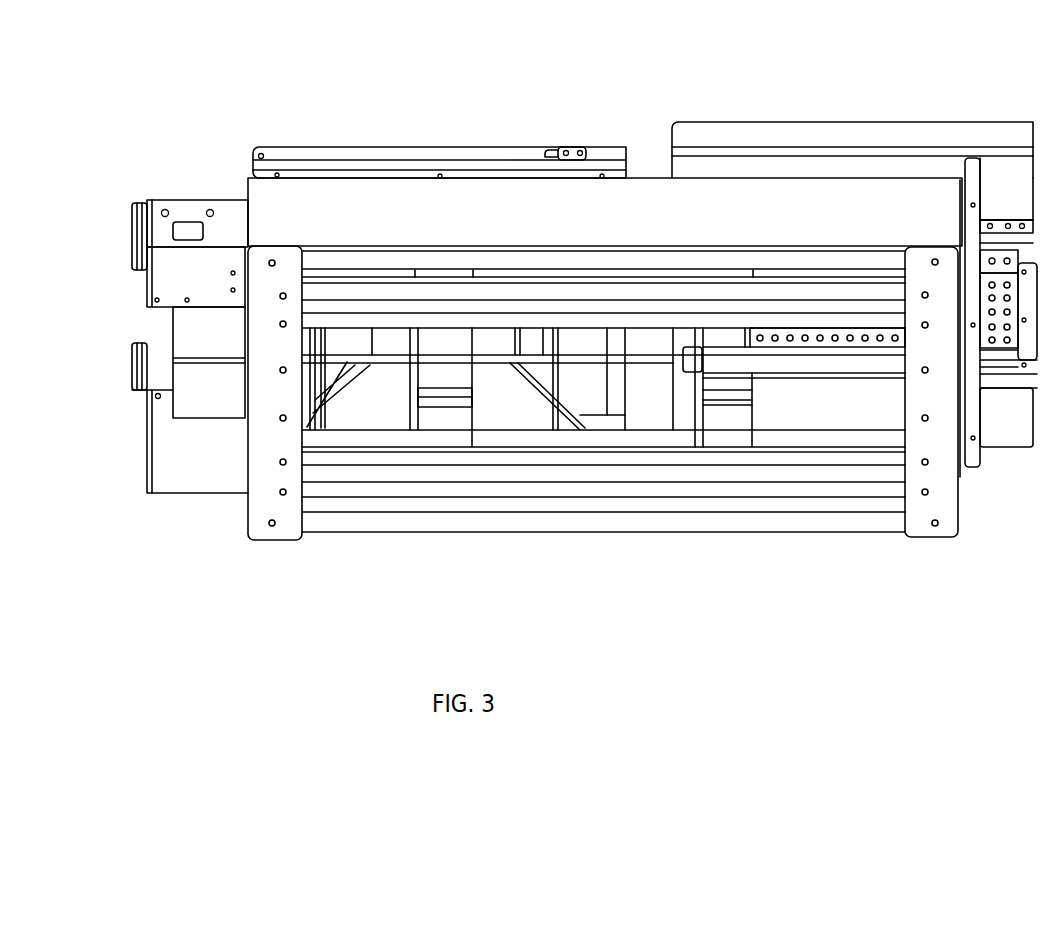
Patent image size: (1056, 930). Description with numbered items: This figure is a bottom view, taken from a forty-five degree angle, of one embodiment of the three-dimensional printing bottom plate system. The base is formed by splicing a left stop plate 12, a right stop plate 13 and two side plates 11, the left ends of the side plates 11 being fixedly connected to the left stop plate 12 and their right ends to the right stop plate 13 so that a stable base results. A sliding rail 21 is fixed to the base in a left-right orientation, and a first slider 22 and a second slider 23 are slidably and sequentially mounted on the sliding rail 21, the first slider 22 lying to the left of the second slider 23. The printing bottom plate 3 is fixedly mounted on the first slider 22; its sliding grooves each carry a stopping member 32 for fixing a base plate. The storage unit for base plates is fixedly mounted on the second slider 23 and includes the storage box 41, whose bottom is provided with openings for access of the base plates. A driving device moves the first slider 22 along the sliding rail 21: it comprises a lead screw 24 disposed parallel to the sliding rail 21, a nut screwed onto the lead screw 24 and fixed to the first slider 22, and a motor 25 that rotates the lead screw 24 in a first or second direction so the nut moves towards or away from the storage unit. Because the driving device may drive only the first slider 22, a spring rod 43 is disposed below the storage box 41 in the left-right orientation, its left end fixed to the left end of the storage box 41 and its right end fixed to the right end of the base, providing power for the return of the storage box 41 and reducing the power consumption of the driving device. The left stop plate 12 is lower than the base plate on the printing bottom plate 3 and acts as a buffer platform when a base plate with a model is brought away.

The printing bottom plate 3 is at (445, 162).
The stopping member 32 is at (548, 147).
The side plate 11 is at (657, 208).
The storage box 41 is at (850, 132).
The left stop plate 12 is at (165, 470).
The motor 25 is at (215, 393).
The lead screw 24 is at (345, 360).
The first slider 22 is at (444, 422).
The sliding rail 21 is at (628, 490).
The second slider 23 is at (716, 425).
The spring rod 43 is at (807, 355).
The right stop plate 13 is at (960, 477).